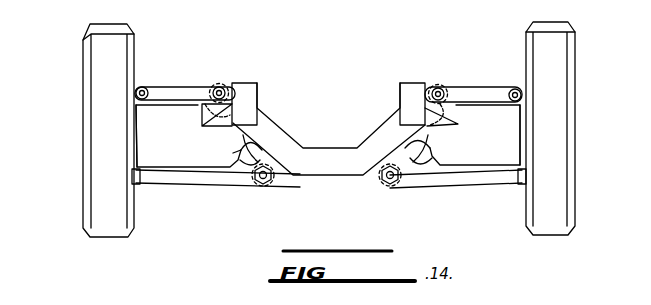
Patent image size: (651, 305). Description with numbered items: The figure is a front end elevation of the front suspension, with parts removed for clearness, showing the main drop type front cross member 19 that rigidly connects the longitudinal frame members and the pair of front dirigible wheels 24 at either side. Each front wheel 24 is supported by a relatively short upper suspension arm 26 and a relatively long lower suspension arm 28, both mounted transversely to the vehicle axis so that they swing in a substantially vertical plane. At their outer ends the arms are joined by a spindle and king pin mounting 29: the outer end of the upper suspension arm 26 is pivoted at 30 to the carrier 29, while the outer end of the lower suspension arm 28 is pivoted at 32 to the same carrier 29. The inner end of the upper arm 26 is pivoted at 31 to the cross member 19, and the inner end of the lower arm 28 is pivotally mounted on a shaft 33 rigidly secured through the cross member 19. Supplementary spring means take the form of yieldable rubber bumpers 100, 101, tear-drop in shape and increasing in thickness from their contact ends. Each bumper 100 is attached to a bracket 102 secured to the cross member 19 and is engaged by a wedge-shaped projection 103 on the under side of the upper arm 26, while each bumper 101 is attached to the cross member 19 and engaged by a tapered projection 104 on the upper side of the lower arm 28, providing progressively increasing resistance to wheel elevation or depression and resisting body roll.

The main drop type front cross member 19 is at (275, 133).
The front dirigible wheels 24 is at (93, 73).
The upper suspension arms 26 is at (171, 92).
The lower suspension arms 28 is at (197, 178).
The spindle and king pin mounting 29 is at (142, 141).
The pivot 30 is at (145, 88).
The pivot 31 is at (222, 88).
The pivot 32 is at (138, 185).
The pivot shaft 33 is at (266, 186).
The yieldable rubber bumper 100 is at (196, 128).
The yieldable rubber bumper 101 is at (245, 144).
The bracket 102 is at (235, 115).
The wedge-shaped projection 103 is at (194, 108).
The wedge-shaped projection 104 is at (233, 153).